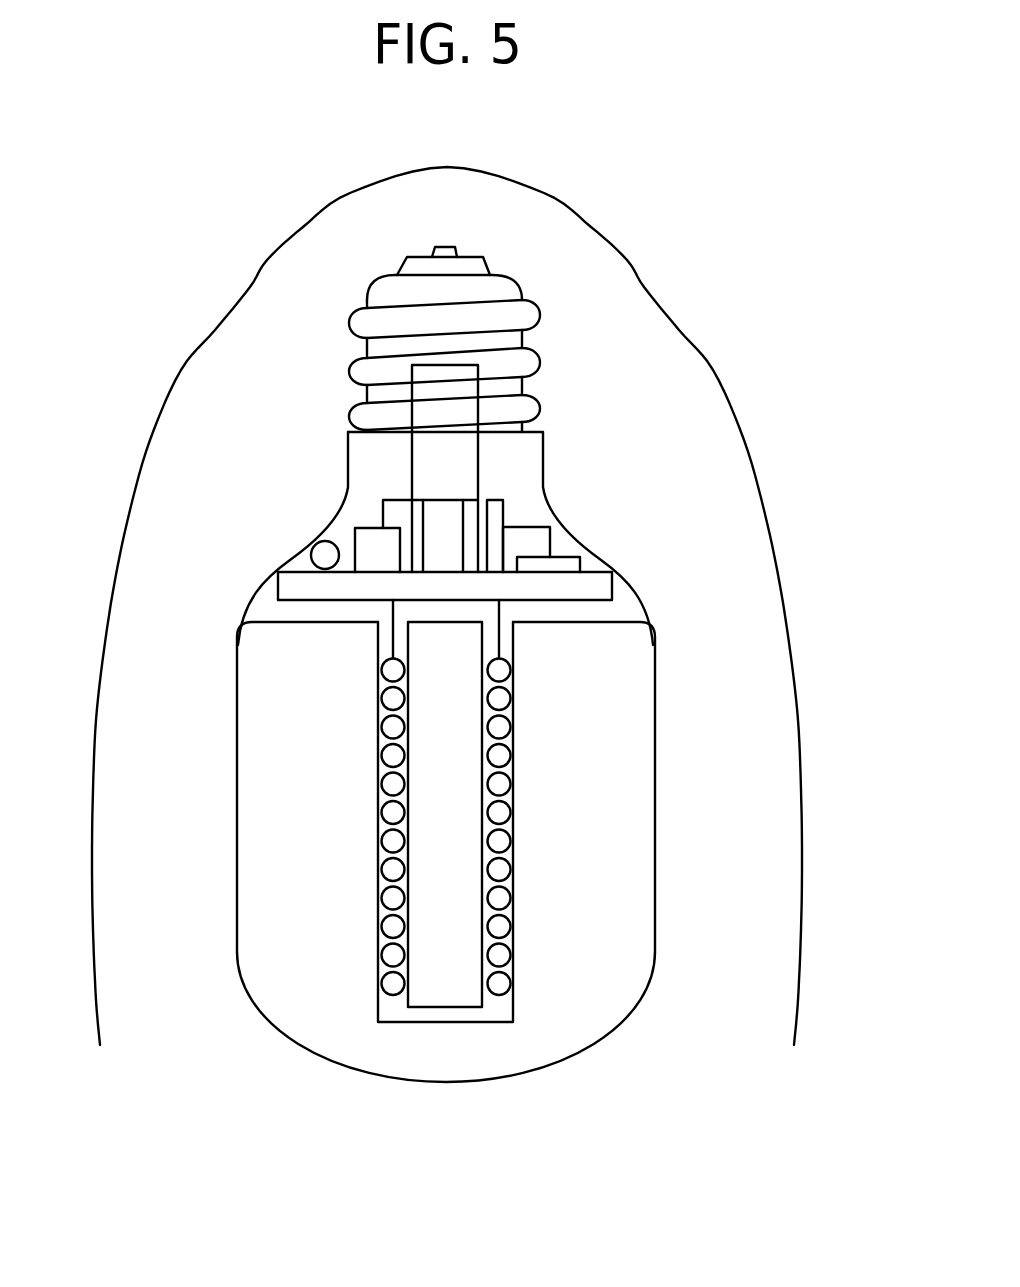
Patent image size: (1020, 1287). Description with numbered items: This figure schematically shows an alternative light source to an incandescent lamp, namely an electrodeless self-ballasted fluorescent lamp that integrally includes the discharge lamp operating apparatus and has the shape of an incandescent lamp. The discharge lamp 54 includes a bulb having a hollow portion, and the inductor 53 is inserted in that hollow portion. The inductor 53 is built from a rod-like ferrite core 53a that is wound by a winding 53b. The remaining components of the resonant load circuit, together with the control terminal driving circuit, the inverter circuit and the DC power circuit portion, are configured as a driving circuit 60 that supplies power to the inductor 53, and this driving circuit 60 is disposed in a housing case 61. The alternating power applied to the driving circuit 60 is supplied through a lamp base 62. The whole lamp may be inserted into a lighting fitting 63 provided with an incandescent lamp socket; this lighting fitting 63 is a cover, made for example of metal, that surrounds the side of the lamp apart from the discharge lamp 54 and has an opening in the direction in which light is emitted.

The inductor 53 is at (462, 985).
The rod-like ferrite core 53a is at (438, 973).
The winding 53b is at (502, 898).
The discharge lamp 54 is at (655, 955).
The driving circuit 60 is at (480, 484).
The housing case 61 is at (337, 517).
The lamp base 62 is at (368, 366).
The lighting fitting (cover) 63 is at (710, 383).